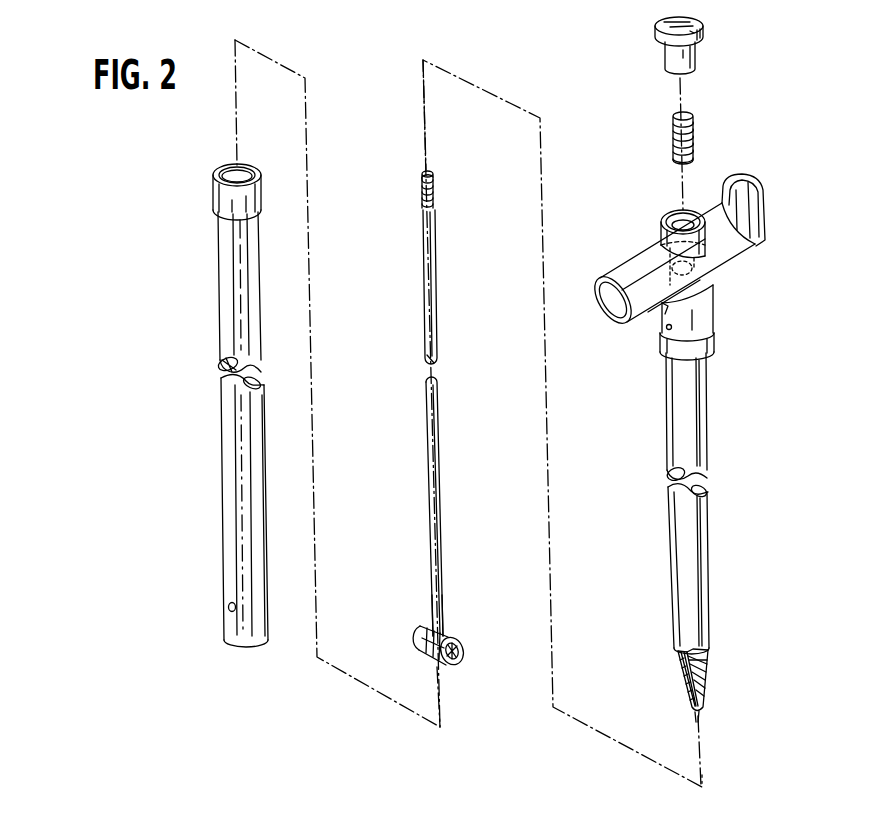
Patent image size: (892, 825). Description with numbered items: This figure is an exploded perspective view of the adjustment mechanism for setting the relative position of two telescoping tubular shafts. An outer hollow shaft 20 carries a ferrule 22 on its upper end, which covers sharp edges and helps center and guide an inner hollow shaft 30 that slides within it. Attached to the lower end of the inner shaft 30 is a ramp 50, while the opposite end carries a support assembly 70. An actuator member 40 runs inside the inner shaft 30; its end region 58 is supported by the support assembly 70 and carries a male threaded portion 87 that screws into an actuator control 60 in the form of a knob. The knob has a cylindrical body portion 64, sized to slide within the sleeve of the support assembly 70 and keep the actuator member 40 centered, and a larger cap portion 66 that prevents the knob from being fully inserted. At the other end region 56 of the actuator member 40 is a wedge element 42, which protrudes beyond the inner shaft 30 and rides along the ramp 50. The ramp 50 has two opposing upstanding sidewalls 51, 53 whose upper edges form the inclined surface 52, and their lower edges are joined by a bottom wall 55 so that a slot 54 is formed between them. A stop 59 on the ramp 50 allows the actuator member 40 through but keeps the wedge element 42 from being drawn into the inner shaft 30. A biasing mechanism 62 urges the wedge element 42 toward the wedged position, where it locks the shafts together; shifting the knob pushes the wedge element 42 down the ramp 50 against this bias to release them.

The outer hollow shaft 20 is at (217, 252).
The ferrule 22 is at (212, 183).
The inner hollow shaft 30 is at (710, 567).
The actuator member 40 is at (442, 530).
The wedge element 42 is at (460, 668).
The ramp 50 is at (711, 692).
The sidewall 51 is at (709, 653).
The inclined surface 52 is at (681, 668).
The sidewall 53 is at (686, 690).
The slot 54 is at (700, 728).
The bottom wall 55 is at (709, 672).
The end region 56 is at (443, 605).
The end region 58 is at (437, 253).
The stop 59 is at (678, 653).
The actuator control 60 is at (703, 19).
The biasing mechanism 62 is at (693, 128).
The cylindrical body portion 64 is at (697, 60).
The cap portion 66 is at (703, 37).
The support assembly 70 is at (728, 262).
The male threaded portion 87 is at (433, 195).